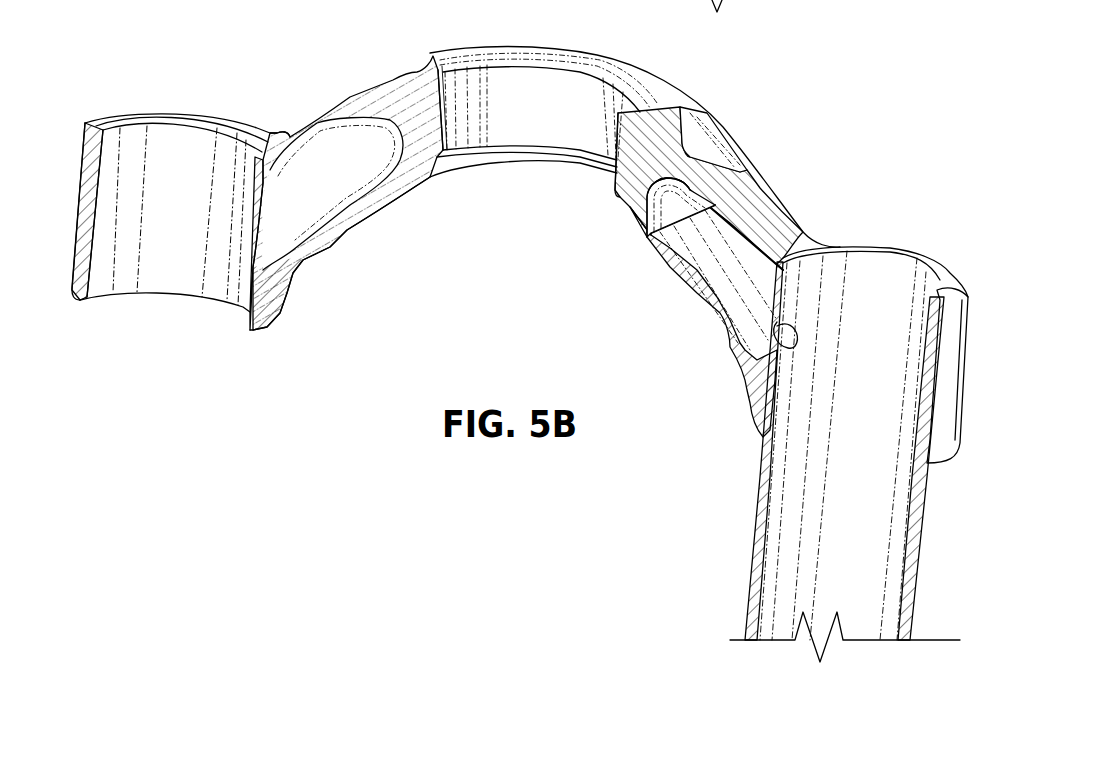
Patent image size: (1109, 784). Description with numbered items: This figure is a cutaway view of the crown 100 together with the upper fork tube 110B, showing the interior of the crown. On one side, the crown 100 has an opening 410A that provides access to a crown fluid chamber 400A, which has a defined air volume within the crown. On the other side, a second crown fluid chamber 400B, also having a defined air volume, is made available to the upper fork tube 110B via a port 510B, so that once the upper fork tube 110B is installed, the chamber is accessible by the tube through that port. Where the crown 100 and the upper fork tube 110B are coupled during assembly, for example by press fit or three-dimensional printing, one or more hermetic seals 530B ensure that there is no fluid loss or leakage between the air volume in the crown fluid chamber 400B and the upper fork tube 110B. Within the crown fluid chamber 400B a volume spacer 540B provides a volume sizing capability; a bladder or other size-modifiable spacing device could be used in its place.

The crown 100 is at (393, 80).
The opening 410A is at (263, 167).
The crown fluid chamber 400A is at (367, 197).
The volume spacer 540B is at (665, 228).
The crown fluid chamber 400B is at (681, 272).
The port 510B is at (757, 360).
The hermetic seal 530B is at (947, 280).
The upper fork tube 110B is at (858, 437).